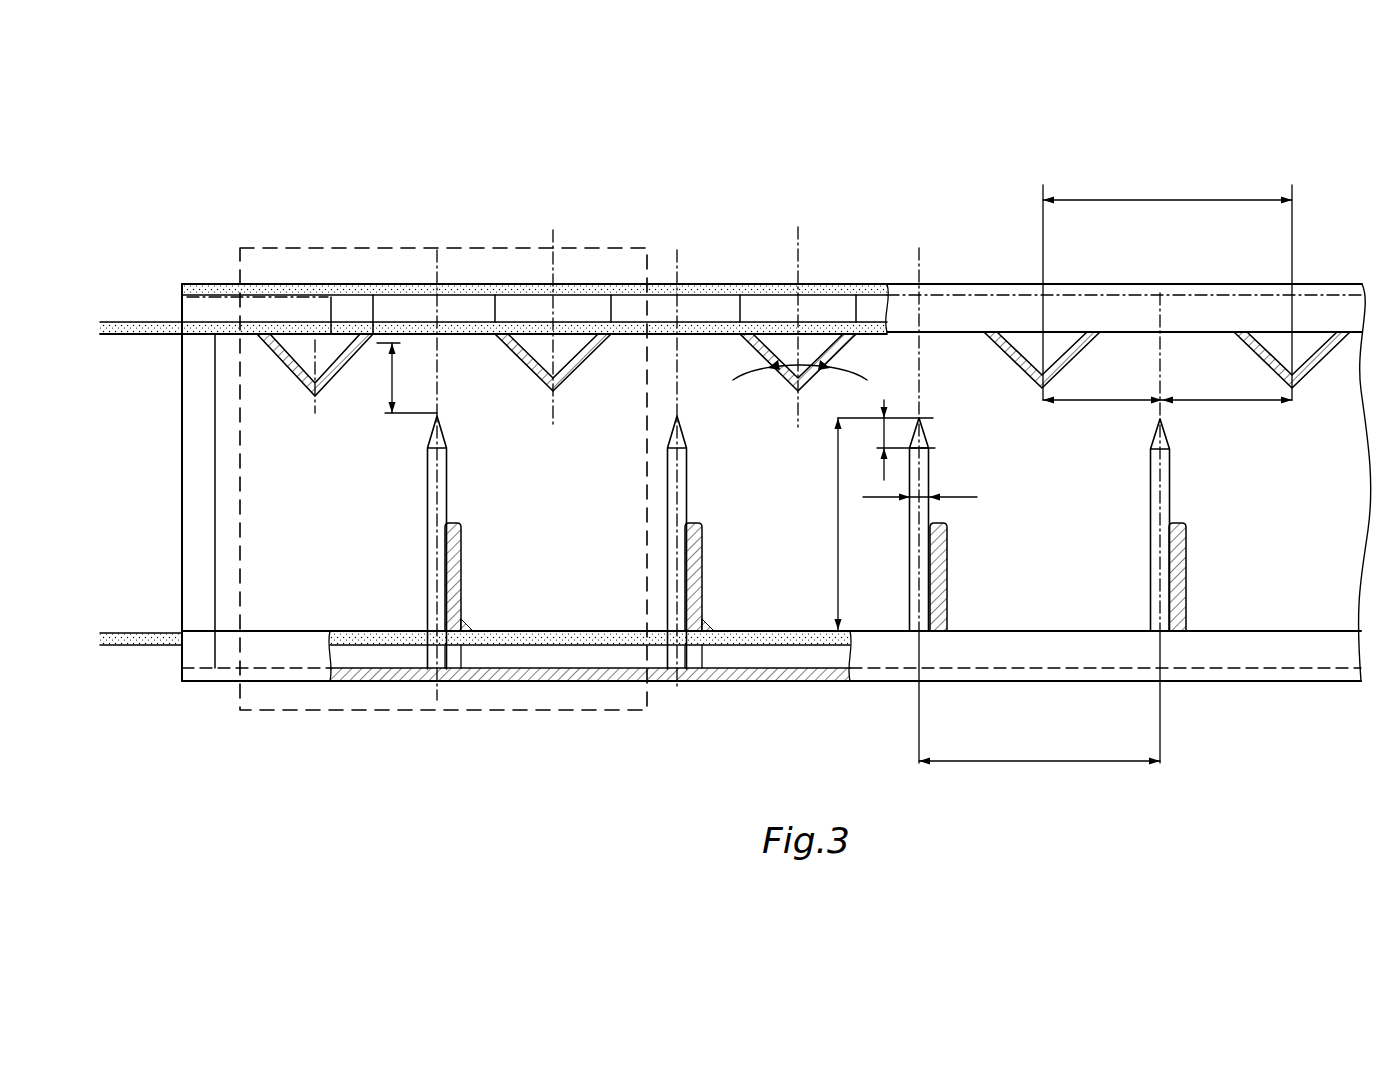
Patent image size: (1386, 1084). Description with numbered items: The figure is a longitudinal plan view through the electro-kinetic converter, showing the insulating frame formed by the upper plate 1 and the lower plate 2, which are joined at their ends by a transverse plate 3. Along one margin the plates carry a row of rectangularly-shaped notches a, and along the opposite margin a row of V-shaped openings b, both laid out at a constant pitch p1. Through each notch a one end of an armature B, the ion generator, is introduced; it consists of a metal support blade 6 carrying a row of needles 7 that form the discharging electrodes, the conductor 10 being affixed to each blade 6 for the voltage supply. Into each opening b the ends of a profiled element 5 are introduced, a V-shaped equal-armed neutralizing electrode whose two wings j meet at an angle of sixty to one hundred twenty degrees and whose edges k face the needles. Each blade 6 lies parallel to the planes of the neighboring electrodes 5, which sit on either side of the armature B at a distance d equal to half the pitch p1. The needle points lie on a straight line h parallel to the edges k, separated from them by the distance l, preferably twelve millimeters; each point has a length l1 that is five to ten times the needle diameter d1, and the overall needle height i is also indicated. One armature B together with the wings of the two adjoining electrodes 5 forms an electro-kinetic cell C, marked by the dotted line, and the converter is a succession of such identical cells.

The upper plate 1 is at (138, 327).
The lower plate 2 is at (268, 423).
The transverse plate 3 is at (200, 525).
The profiled element 5 is at (268, 343).
The metal support blade 6 is at (450, 582).
The needle 7 is at (437, 502).
The conductor 10 is at (142, 637).
The rectangularly-shaped notch a is at (452, 655).
The V-shaped opening b is at (355, 308).
The wing j is at (515, 350).
The edge k is at (375, 343).
The armature B is at (412, 610).
The electro-kinetic cell C is at (611, 243).
The straight line h is at (437, 413).
The distance l is at (397, 380).
The spike height i is at (838, 538).
The length of the points l1 is at (884, 440).
The diameter of the needle d1 is at (922, 484).
The distance d is at (1097, 400).
The pitch p1 is at (1162, 200).